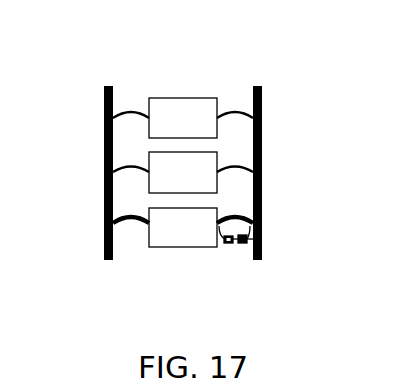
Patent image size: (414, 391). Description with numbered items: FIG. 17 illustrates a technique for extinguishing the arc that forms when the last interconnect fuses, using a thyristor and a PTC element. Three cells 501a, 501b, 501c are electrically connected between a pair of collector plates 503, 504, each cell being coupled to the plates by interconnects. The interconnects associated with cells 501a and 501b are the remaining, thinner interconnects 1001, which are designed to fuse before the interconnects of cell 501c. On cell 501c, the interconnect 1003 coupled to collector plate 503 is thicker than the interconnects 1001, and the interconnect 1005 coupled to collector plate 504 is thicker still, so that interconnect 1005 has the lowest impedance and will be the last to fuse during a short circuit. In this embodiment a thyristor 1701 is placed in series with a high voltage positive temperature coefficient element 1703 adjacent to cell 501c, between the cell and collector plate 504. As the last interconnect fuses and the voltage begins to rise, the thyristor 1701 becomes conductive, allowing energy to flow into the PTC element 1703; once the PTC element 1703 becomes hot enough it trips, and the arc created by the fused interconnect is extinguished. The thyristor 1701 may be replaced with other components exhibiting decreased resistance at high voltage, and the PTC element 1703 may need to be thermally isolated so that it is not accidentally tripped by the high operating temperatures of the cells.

The cell 501a is at (194, 98).
The cell 501b is at (221, 158).
The cell 501c is at (175, 247).
The interconnect 1001 is at (128, 112).
The interconnect 1003 is at (128, 218).
The interconnect 1005 is at (241, 221).
The collector plate 503 is at (104, 118).
The collector plate 504 is at (262, 118).
The thyristor 1701 is at (228, 243).
The positive temperature coefficient (PTC) element 1703 is at (262, 256).